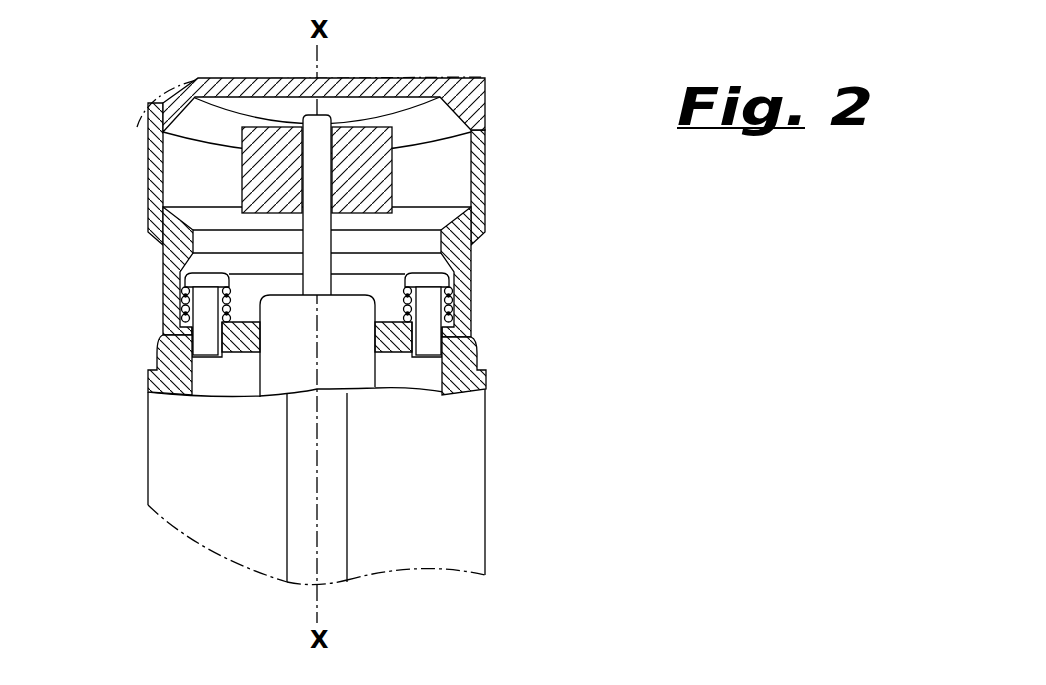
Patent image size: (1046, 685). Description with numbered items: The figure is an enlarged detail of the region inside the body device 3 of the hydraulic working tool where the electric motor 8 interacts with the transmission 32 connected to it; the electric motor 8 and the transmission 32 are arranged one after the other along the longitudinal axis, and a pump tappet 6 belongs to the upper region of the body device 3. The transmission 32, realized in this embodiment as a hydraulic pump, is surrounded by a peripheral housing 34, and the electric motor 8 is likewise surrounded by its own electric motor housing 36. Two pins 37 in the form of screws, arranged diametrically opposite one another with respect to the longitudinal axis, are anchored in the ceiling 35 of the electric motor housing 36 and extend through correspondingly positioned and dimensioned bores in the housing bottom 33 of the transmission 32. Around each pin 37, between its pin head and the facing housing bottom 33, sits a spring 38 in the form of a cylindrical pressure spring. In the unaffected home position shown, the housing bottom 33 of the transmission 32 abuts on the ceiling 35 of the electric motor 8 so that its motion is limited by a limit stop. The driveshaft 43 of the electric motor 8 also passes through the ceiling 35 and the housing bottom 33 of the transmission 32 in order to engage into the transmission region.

The body device 3 is at (138, 92).
The pump tappet 6 is at (250, 88).
The electric motor 8 is at (432, 468).
The transmission 32 is at (434, 159).
The housing bottom 33 is at (393, 325).
The peripheral housing 34 is at (178, 234).
The ceiling 35 is at (235, 345).
The electric motor housing 36 is at (462, 385).
The pin 37 is at (207, 325).
The spring 38 is at (181, 301).
The driveshaft 43 is at (324, 200).